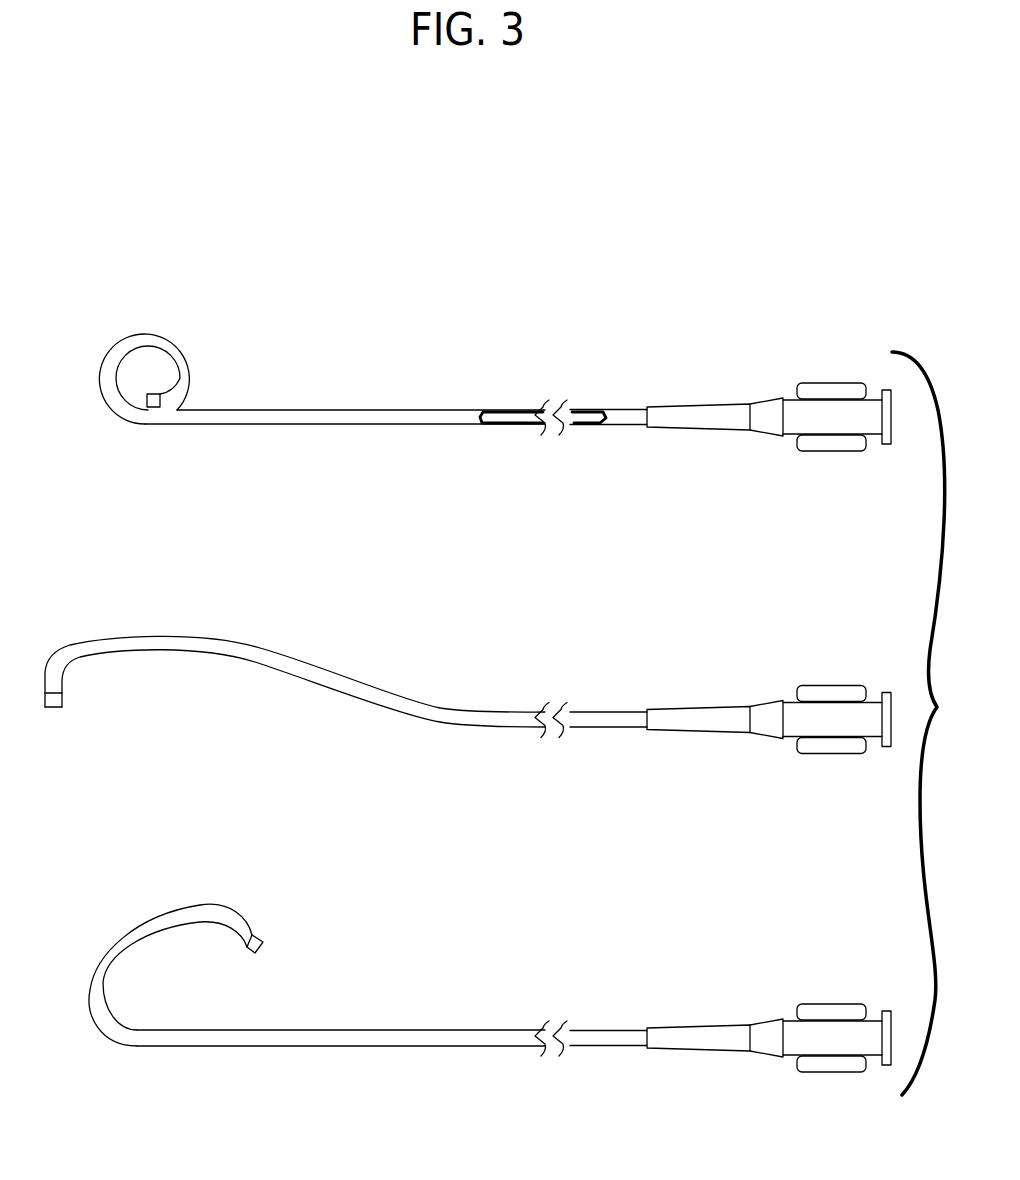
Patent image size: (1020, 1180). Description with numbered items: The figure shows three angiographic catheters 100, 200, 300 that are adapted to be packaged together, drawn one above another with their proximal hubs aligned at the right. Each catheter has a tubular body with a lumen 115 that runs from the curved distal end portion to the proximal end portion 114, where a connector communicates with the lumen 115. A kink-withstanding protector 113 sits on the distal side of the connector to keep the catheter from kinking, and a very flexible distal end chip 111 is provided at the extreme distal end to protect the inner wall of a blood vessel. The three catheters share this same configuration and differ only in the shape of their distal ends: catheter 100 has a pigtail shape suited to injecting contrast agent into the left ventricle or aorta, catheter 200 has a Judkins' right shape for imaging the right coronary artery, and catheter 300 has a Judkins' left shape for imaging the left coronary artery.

The angiographic catheter 100 is at (376, 351).
The angiographic catheter 200 is at (463, 663).
The angiographic catheter 300 is at (405, 968).
The distal end chip 111 is at (157, 393).
The kink-withstanding protector 113 is at (743, 403).
The proximal end portion 114 is at (618, 428).
The lumen 115 is at (583, 418).